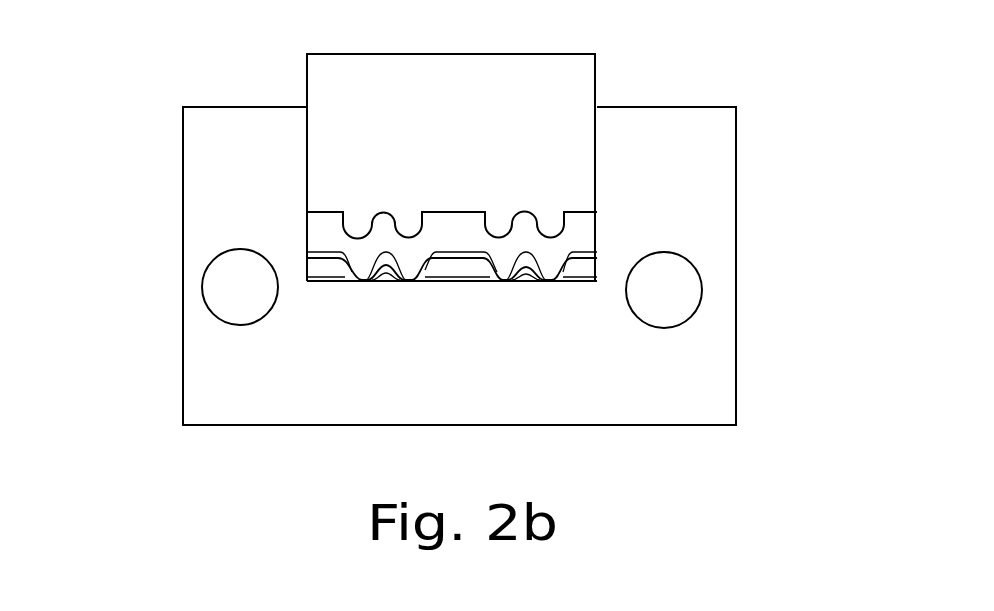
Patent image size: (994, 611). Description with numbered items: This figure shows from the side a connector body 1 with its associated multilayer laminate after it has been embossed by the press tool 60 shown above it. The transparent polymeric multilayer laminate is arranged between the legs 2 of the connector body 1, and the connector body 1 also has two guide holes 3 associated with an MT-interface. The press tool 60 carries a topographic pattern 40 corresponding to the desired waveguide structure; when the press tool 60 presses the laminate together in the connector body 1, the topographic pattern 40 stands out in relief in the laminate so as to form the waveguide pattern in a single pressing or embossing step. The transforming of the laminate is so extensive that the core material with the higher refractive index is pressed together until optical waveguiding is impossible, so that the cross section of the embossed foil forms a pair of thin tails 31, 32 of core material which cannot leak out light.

The connector body 1 is at (120, 335).
The legs 2 is at (703, 183).
The guide holes 3 is at (670, 296).
The press tool 60 is at (661, 63).
The topographic pattern 40 is at (357, 220).
The tail 31 is at (360, 282).
The tail 32 is at (405, 282).